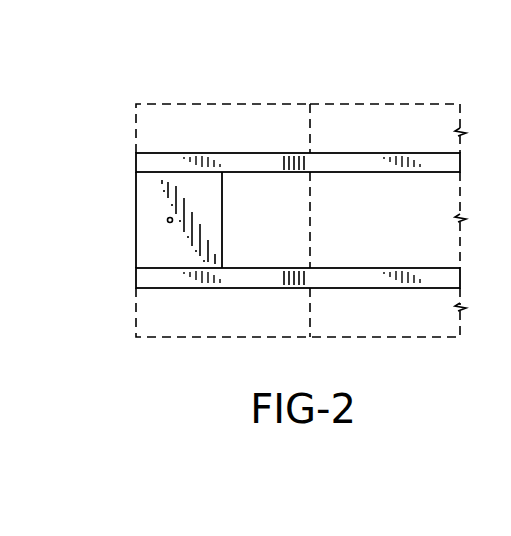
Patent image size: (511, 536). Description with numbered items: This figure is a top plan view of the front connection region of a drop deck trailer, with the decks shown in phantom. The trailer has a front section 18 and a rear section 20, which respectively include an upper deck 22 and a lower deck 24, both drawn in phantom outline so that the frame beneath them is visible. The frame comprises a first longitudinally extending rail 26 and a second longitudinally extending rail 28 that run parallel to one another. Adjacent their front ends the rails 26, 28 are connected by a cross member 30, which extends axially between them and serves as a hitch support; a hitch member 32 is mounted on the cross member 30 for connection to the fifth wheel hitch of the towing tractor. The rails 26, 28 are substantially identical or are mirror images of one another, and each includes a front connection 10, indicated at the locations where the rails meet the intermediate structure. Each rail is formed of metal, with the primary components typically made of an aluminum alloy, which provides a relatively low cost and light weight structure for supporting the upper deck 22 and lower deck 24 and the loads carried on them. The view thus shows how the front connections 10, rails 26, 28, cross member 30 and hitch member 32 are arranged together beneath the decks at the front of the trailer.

The front connection 10 is at (306, 180).
The front section 18 is at (212, 156).
The rear section 20 is at (410, 154).
The upper deck 22 is at (152, 118).
The lower deck 24 is at (351, 118).
The first longitudinally extending parallel rail 26 is at (264, 276).
The second longitudinally extending parallel rail 28 is at (265, 164).
The cross member 30 is at (179, 250).
The hitch member 32 is at (166, 220).